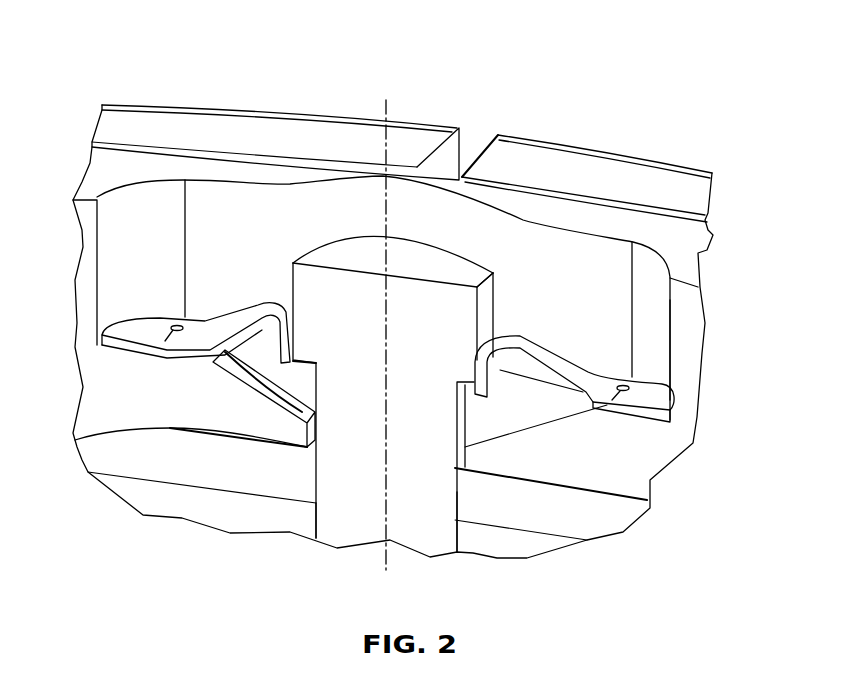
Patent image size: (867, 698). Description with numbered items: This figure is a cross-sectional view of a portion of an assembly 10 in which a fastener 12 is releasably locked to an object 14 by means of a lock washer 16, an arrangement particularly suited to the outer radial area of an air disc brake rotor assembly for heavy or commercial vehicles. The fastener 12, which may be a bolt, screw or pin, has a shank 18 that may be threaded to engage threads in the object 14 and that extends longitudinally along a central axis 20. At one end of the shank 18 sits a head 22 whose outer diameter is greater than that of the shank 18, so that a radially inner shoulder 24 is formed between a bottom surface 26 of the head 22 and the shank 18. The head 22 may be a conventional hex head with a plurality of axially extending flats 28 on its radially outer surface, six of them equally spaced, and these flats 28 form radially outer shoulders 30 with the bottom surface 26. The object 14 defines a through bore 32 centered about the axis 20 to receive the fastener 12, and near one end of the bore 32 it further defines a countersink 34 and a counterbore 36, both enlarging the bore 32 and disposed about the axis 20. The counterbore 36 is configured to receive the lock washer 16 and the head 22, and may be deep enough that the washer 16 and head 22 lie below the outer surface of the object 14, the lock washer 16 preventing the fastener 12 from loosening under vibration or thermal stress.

The assembly 10 is at (126, 76).
The fastener 12 is at (328, 460).
The object 14 is at (687, 263).
The lock washer 16 is at (268, 298).
The shank 18 is at (420, 528).
The central axis 20 is at (387, 560).
The head 22 is at (453, 303).
The radially inner shoulder 24 is at (290, 363).
The bottom surface 26 is at (303, 363).
The axially extending flats 28 is at (483, 298).
The radially outer shoulders 30 is at (475, 380).
The through bore 32 is at (455, 492).
The countersink 34 is at (500, 410).
The counterbore 36 is at (645, 348).